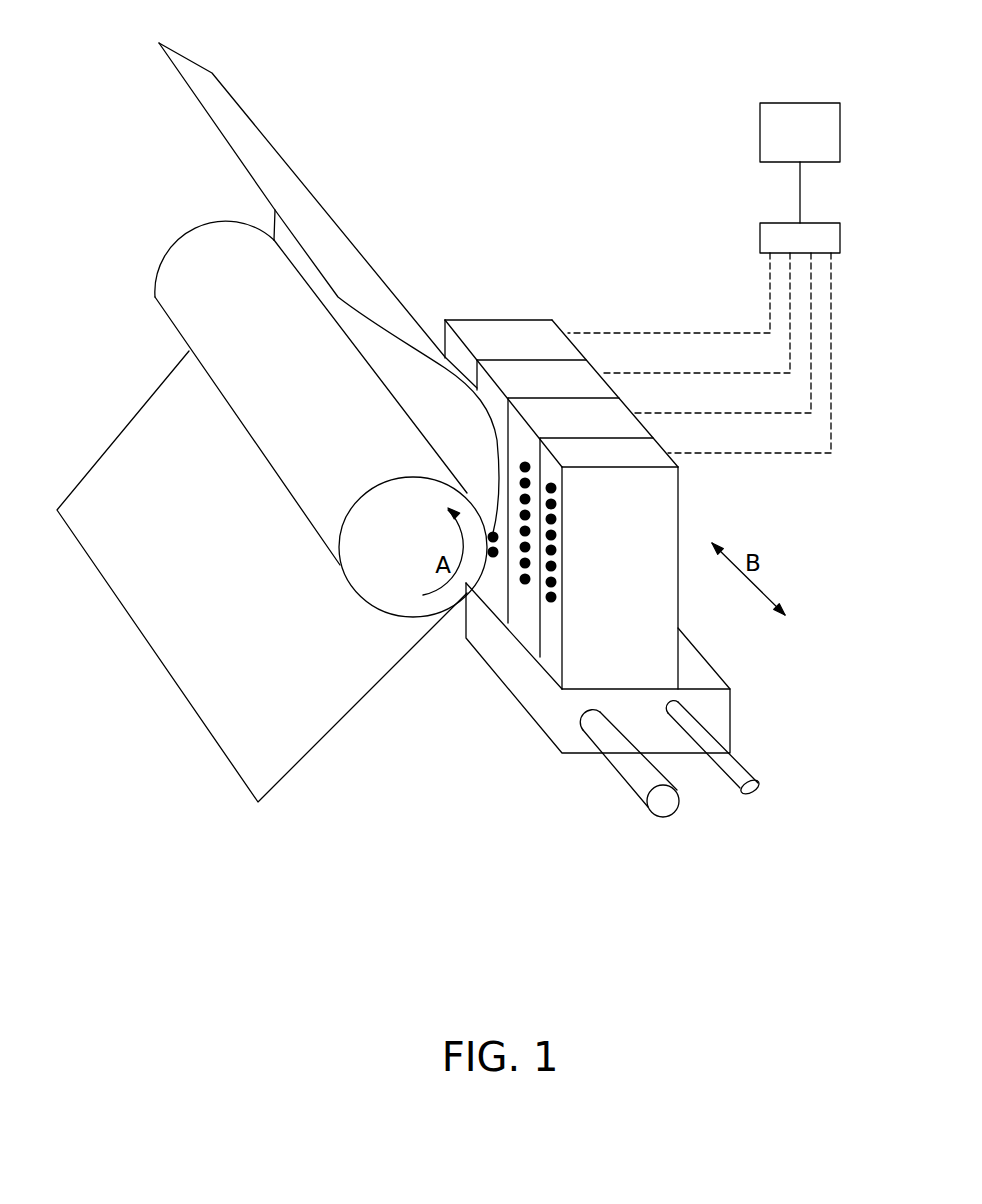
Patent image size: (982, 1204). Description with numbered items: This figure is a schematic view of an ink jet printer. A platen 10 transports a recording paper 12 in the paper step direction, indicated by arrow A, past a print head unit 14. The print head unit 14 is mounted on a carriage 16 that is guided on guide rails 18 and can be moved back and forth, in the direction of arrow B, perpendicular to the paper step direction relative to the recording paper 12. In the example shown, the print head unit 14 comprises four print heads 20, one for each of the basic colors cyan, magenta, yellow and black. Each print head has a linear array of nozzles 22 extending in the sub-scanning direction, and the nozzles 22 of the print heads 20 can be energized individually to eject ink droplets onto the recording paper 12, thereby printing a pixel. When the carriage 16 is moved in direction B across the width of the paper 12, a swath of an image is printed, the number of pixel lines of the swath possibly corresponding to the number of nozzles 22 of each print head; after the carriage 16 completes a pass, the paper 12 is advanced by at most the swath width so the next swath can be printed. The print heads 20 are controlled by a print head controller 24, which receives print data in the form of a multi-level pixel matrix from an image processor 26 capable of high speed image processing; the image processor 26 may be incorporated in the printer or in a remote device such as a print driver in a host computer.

The platen 10 is at (192, 243).
The recording paper 12 is at (213, 103).
The print head unit 14 is at (498, 286).
The carriage 16 is at (533, 695).
The guide rails 18 is at (627, 763).
The print heads 20 is at (498, 313).
The nozzles 22 is at (553, 525).
The print head controller 24 is at (765, 233).
The image processor 26 is at (773, 113).